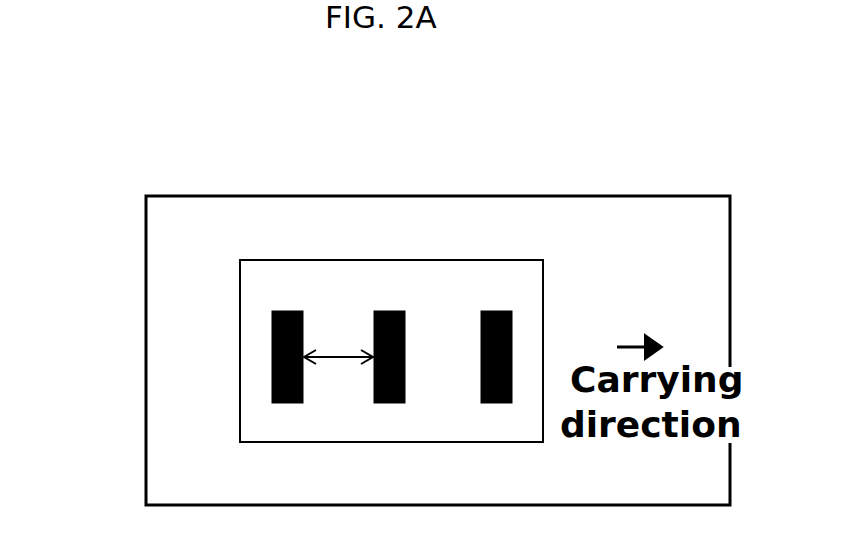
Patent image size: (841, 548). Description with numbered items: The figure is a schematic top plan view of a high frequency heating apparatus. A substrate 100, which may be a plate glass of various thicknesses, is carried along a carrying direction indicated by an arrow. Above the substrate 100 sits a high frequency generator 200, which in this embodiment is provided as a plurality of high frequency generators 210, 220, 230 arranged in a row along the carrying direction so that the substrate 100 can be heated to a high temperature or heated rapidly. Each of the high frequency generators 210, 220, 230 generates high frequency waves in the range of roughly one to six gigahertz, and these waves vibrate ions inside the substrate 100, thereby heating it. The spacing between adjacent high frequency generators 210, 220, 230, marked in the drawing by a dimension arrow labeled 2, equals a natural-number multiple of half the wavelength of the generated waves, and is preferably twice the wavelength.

The substrate 100 is at (240, 357).
The high frequency generator 200 is at (543, 132).
The high frequency generator 210 is at (287, 312).
The high frequency generator 220 is at (390, 312).
The high frequency generator 230 is at (497, 312).
The spacing between display units 2 is at (338, 342).